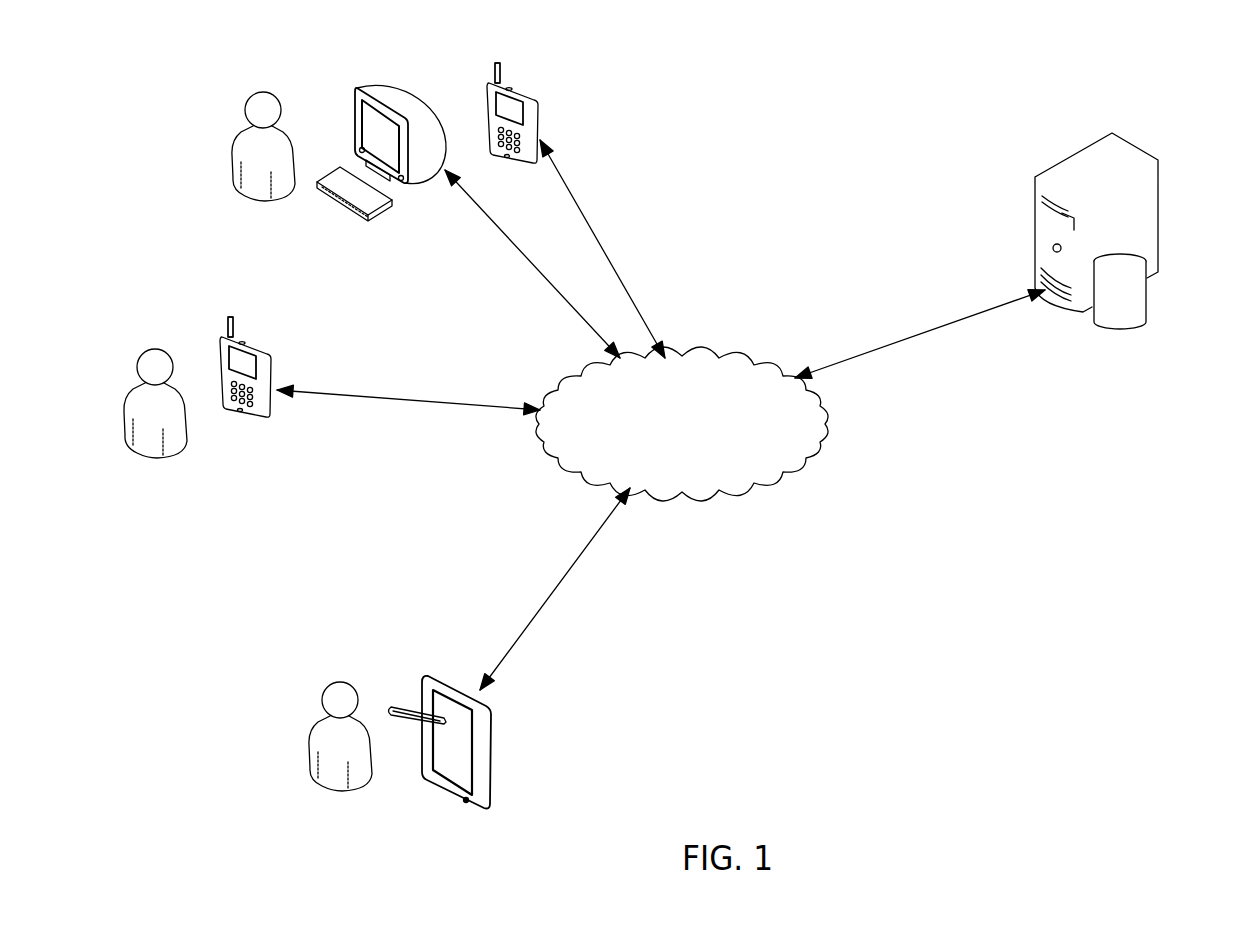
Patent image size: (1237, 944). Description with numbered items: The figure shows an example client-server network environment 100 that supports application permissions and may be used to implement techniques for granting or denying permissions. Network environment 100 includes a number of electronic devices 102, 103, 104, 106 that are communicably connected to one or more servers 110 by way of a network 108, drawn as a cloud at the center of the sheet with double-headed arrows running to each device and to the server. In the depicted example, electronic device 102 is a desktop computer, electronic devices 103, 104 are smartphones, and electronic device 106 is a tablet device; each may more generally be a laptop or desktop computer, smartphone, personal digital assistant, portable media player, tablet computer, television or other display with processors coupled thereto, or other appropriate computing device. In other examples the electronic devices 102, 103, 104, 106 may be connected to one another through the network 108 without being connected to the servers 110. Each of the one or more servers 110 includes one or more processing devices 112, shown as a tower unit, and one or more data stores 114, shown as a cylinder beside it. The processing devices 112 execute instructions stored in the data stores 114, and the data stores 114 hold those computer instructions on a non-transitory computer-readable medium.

The network environment 100 is at (760, 135).
The electronic device 102 is at (383, 90).
The electronic device 103 is at (526, 90).
The electronic device 104 is at (259, 346).
The electronic device 106 is at (434, 680).
The network 108 is at (682, 356).
The server 110 is at (1103, 237).
The processing device 112 is at (1133, 148).
The data store 114 is at (1147, 308).